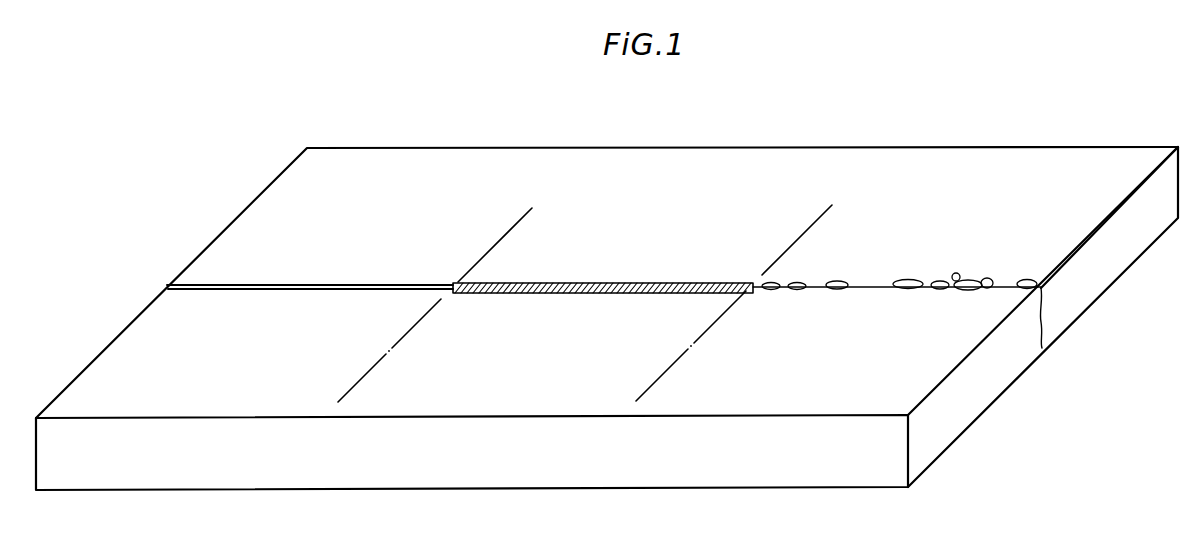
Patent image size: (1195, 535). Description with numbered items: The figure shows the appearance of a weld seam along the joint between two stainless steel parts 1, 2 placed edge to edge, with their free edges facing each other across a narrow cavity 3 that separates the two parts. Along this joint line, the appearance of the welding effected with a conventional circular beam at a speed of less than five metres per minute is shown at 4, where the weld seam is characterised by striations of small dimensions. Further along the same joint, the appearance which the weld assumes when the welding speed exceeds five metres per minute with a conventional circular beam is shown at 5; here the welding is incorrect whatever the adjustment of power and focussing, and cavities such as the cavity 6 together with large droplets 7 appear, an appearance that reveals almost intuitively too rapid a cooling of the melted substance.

The part 1 is at (975, 403).
The part 2 is at (1088, 283).
The narrow cavity 3 is at (343, 286).
The weld seam at low speed 4 is at (612, 283).
The weld seam at high speed 5 is at (865, 284).
The cavity 6 is at (938, 283).
The large droplet 7 is at (958, 274).